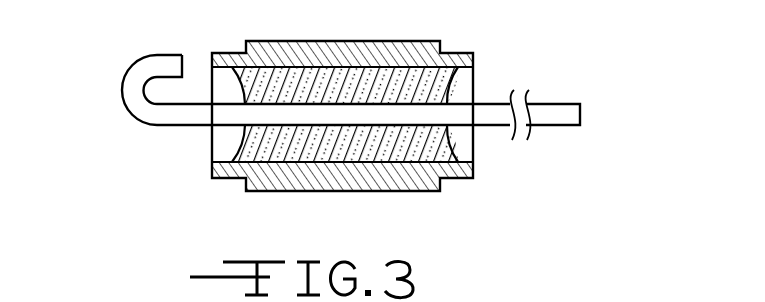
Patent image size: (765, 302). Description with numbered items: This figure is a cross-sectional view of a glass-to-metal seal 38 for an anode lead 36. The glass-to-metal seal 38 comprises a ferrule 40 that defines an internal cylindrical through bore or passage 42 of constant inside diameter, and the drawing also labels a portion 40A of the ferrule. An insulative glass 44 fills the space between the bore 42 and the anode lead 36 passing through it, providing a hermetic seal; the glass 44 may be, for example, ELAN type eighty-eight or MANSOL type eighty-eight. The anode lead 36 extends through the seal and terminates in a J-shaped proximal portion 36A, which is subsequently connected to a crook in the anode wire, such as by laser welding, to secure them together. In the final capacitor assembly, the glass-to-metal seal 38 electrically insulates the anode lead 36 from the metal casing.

The anode lead 36 is at (564, 111).
The J-shaped proximal portion 36A is at (124, 90).
The glass-to-metal seal 38 is at (580, 52).
The ferrule 40 is at (410, 185).
The upper housing portion 40A is at (442, 50).
The through bore 42 is at (474, 153).
The insulative glass 44 is at (452, 86).